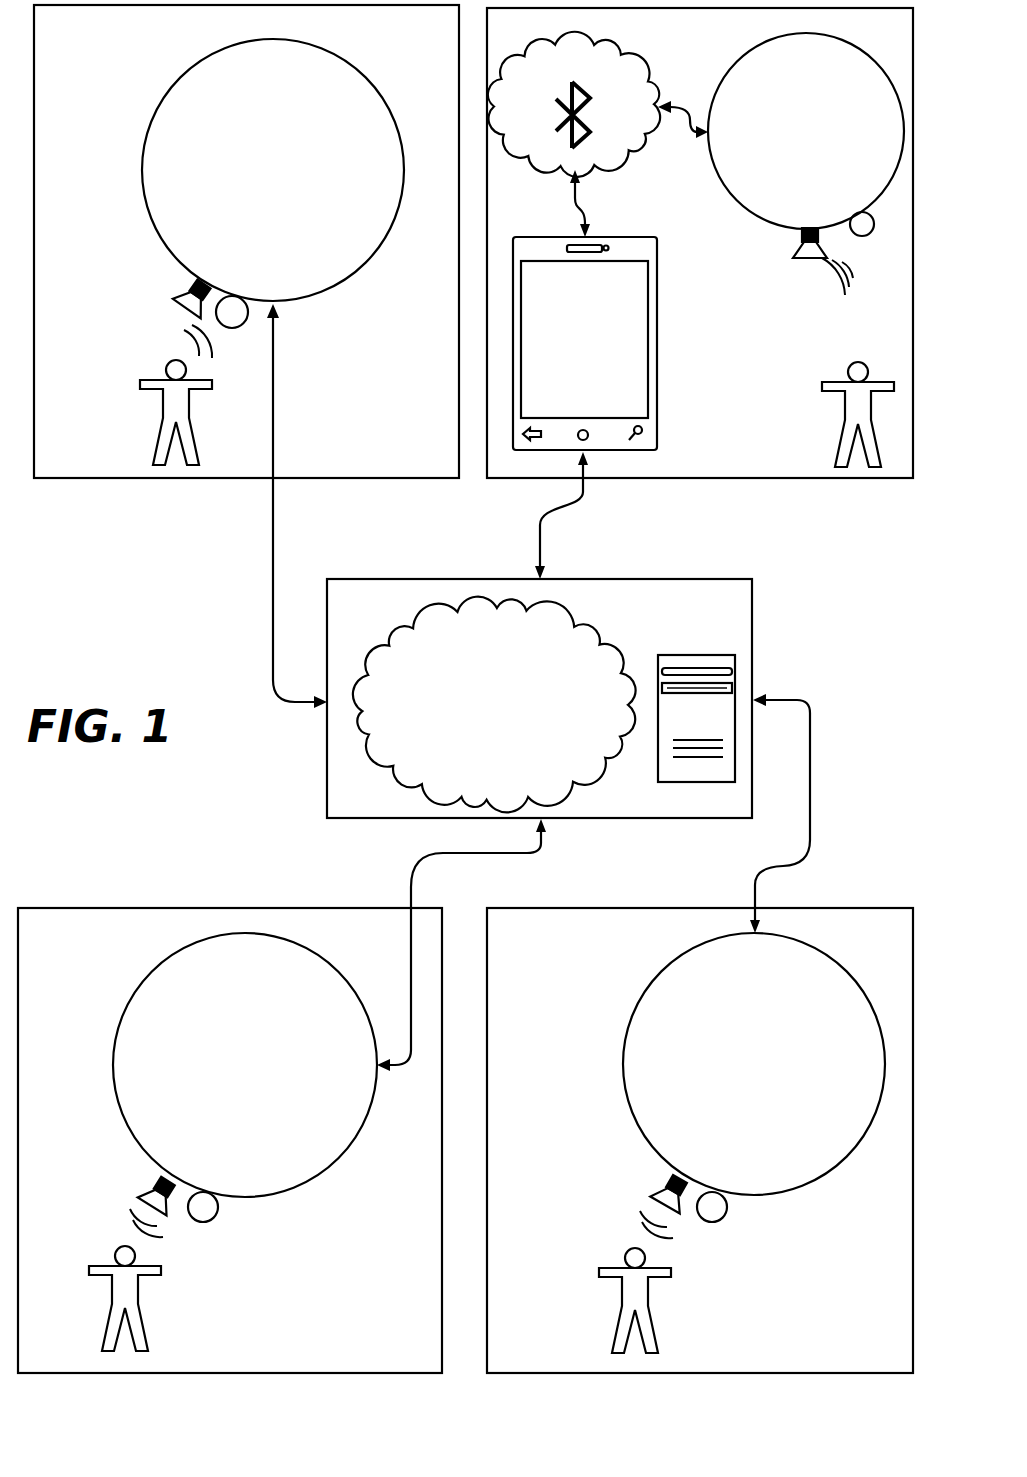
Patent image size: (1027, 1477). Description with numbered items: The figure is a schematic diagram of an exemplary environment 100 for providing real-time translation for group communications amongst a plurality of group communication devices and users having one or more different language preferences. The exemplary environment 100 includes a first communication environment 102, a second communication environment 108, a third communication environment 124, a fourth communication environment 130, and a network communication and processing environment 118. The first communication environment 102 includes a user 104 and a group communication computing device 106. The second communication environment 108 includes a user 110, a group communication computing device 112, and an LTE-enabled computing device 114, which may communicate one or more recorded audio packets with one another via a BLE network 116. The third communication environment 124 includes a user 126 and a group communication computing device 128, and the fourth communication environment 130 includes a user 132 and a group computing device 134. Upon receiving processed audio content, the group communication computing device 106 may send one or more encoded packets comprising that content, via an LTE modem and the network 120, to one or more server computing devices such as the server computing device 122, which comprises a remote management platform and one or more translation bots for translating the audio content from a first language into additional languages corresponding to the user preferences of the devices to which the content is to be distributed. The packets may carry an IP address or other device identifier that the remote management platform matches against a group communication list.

The exemplary environment 100 is at (828, 566).
The first communication environment 102 is at (160, 478).
The user 104 is at (142, 384).
The group communication computing device 106 is at (196, 66).
The second communication environment 108 is at (725, 478).
The user 110 is at (822, 386).
The group communication computing device 112 is at (731, 68).
The LTE-enabled computing device 114 is at (514, 237).
The BLE network 116 is at (629, 59).
The network communication and processing environment 118 is at (327, 818).
The network 120 is at (477, 728).
The server computing device 122 is at (700, 783).
The third communication environment 124 is at (160, 907).
The user 126 is at (90, 1272).
The group communication computing device 128 is at (143, 983).
The fourth communication environment 130 is at (616, 907).
The user 132 is at (600, 1276).
The group computing device 134 is at (652, 983).